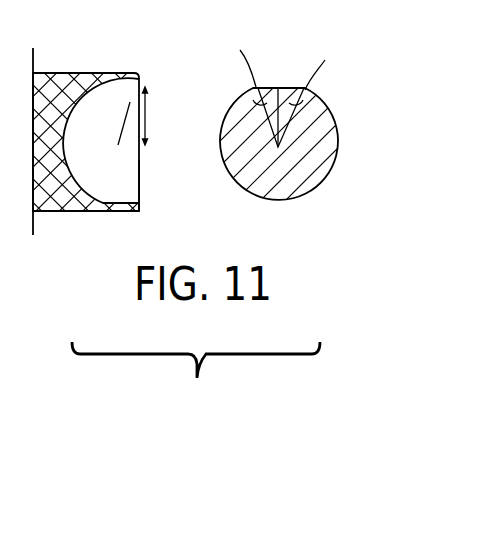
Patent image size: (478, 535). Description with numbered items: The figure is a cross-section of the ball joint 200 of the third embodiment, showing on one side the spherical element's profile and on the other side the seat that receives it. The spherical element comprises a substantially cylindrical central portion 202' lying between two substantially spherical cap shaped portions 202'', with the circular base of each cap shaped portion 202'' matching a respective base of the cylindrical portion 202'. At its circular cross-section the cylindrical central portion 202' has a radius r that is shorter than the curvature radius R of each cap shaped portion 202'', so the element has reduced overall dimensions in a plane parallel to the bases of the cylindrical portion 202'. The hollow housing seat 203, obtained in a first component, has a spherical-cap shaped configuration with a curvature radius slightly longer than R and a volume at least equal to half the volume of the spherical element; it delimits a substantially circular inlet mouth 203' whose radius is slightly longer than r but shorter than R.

The ball joint 200 is at (196, 376).
The substantially cylindrical central portion 202' is at (291, 48).
The substantially spherical cap shaped portion 202'' is at (308, 132).
The hollow housing seat 203 is at (86, 112).
The inlet mouth 203' is at (183, 199).
The curvature radius R is at (205, 87).
The radius r is at (239, 93).